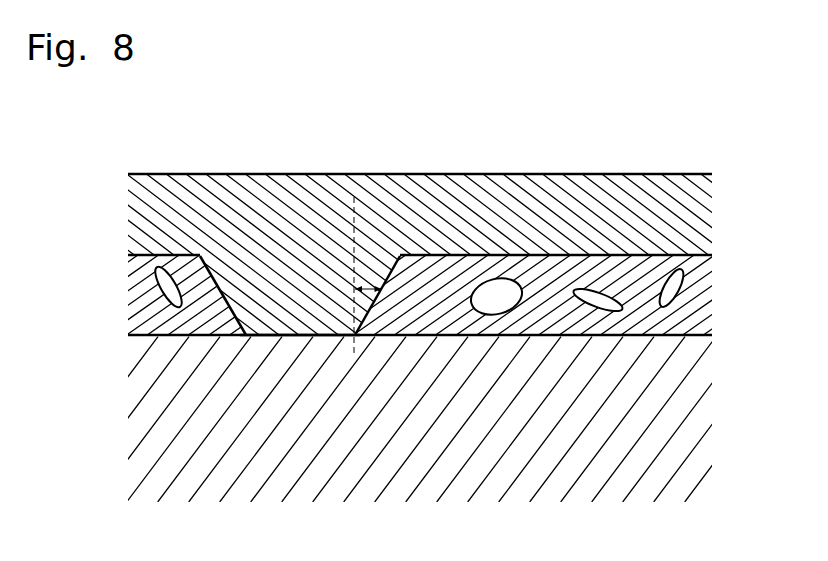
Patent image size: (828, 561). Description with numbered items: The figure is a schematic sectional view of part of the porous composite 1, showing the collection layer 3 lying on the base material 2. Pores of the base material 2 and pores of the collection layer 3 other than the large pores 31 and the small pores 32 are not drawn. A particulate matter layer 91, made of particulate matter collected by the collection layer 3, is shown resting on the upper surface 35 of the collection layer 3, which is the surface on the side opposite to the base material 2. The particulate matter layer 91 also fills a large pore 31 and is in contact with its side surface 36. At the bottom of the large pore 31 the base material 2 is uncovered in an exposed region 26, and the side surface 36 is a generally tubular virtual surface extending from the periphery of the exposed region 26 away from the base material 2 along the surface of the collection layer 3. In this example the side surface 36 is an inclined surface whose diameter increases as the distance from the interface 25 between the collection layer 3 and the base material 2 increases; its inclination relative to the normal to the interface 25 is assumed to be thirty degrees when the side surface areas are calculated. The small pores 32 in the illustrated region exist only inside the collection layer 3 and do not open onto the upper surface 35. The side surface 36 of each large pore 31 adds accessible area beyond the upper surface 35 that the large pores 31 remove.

The porous composite 1 is at (82, 350).
The base material 2 is at (147, 362).
The collection layer 3 is at (150, 315).
The particulate matter layer 91 is at (150, 218).
The interface 25 is at (428, 335).
The exposed region 26 is at (317, 335).
The large pore 31 is at (284, 285).
The small pore 32 is at (502, 285).
The upper surface 35 is at (167, 250).
The side surface 36 is at (216, 275).